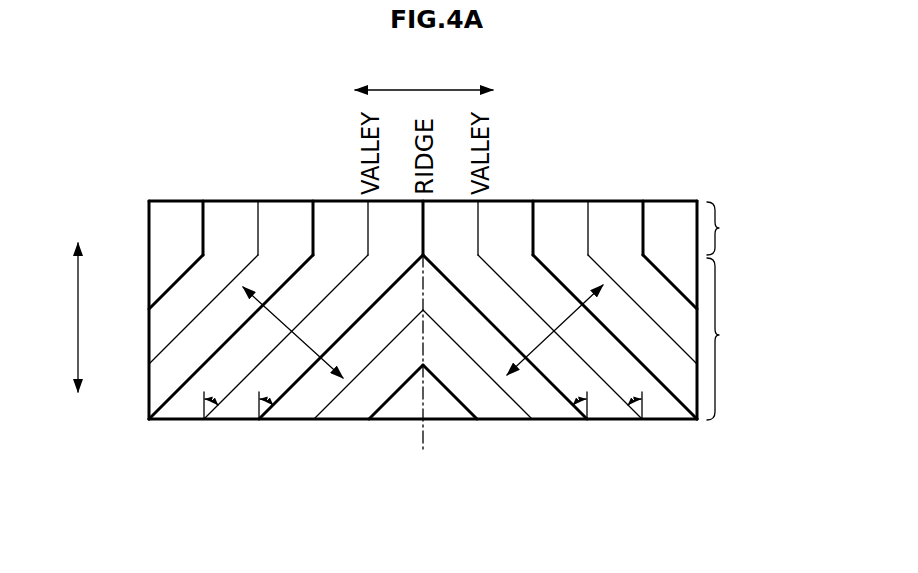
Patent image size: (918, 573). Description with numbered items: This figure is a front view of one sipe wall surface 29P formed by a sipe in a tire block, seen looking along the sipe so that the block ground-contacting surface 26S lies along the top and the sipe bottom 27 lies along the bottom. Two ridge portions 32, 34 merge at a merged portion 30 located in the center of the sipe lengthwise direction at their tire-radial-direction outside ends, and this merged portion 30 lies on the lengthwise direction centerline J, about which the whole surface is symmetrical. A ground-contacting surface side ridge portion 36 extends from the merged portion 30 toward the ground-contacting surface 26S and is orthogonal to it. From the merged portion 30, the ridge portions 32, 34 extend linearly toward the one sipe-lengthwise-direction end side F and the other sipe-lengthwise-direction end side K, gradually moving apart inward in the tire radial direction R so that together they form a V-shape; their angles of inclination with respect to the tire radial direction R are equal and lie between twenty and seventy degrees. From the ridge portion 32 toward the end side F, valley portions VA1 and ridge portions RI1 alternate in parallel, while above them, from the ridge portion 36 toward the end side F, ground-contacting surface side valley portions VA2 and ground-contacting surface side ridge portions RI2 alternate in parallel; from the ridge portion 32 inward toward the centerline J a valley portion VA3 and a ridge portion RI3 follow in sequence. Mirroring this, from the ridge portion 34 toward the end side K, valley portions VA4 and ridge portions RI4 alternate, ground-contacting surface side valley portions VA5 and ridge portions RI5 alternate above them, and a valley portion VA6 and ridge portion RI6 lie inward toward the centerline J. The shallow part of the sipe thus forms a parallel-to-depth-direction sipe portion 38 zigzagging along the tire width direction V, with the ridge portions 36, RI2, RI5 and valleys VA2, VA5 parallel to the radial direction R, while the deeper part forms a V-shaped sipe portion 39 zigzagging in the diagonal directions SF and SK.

The block ground-contacting surface 26S is at (569, 201).
The sipe bottom 27 is at (617, 420).
The sipe wall surface 29P is at (709, 137).
The merged portion 30 is at (424, 253).
The ridge portion 32 is at (346, 326).
The ridge portion 34 is at (473, 305).
The ground-contacting surface side ridge portion 36 is at (422, 232).
The parallel-to-depth-direction sipe portion 38 is at (731, 228).
The V-shaped sipe portion 39 is at (732, 339).
The ridge portion RI1 is at (189, 268).
The ground-contacting surface side ridge portion RI2 is at (199, 200).
The ridge portion RI3 is at (398, 386).
The ridge portion RI4 is at (561, 278).
The ground-contacting surface side ridge portion RI5 is at (542, 200).
The ridge portion RI6 is at (480, 420).
The valley portion VA1 is at (214, 298).
The ground-contacting surface side valley portion VA2 is at (250, 200).
The valley portion VA3 is at (368, 360).
The valley portion VA4 is at (524, 304).
The ground-contacting surface side valley portion VA5 is at (594, 202).
The valley portion VA6 is at (457, 348).
The one sipe-lengthwise-direction end side F is at (148, 254).
The other sipe-lengthwise-direction end side K is at (697, 277).
The tire radial direction R is at (75, 310).
The tire width direction V is at (417, 89).
The lengthwise direction centerline J is at (425, 430).
The direction SF is at (290, 332).
The direction SK is at (566, 322).